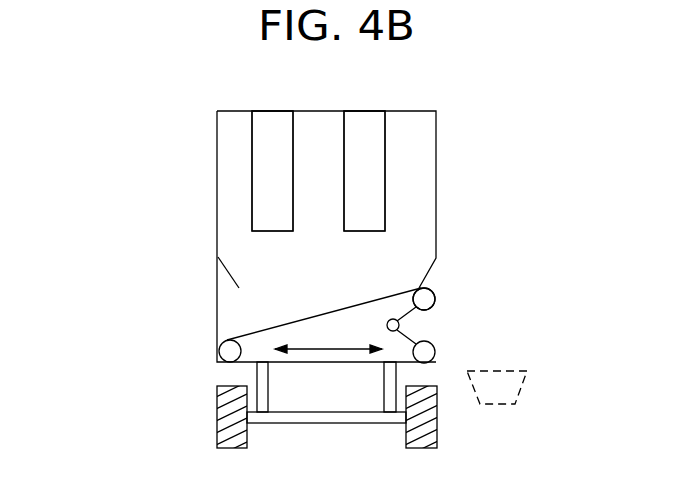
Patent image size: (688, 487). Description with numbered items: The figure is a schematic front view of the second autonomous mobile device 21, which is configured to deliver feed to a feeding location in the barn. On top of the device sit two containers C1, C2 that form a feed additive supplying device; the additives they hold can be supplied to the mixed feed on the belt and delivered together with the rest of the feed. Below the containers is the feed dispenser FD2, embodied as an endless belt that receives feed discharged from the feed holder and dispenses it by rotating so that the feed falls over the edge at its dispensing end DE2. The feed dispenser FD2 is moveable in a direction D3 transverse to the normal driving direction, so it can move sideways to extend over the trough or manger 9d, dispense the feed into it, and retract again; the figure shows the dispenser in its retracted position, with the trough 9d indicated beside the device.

The second autonomous mobile device 21 is at (128, 185).
The container C1 is at (268, 136).
The container C2 is at (367, 136).
The feed dispenser FD2 is at (268, 328).
The dispensing end DE2 is at (443, 285).
The direction D3 is at (317, 349).
The trough or manger 9d is at (498, 387).